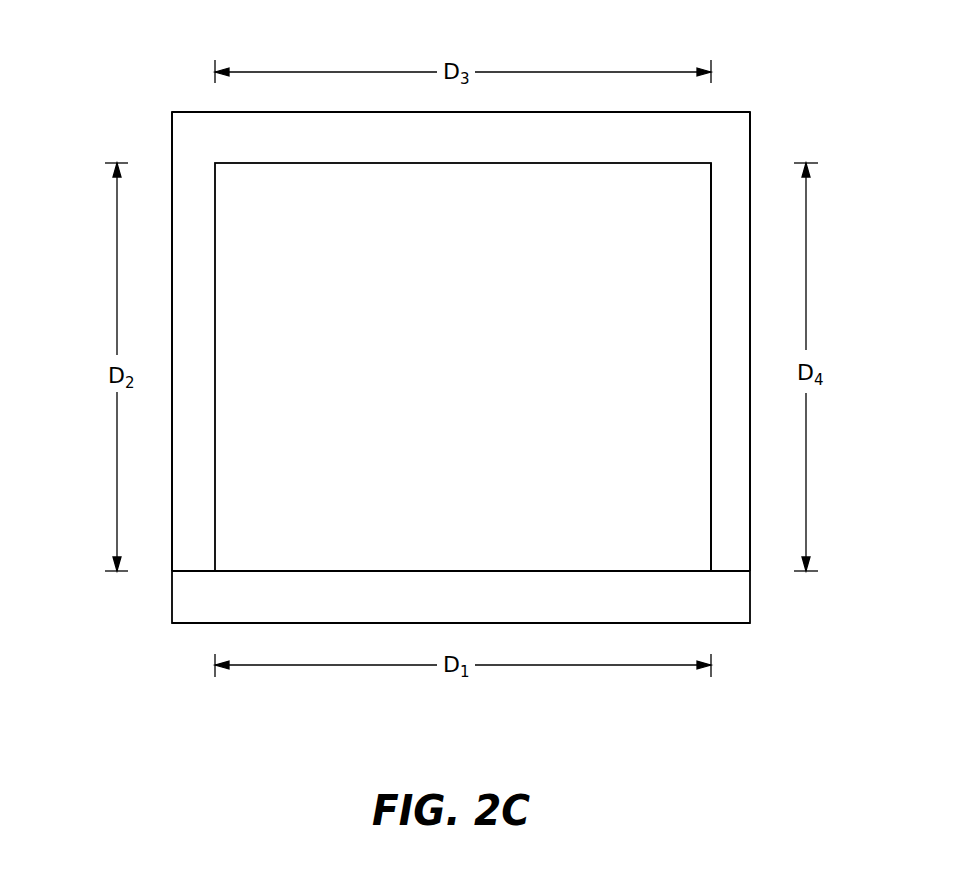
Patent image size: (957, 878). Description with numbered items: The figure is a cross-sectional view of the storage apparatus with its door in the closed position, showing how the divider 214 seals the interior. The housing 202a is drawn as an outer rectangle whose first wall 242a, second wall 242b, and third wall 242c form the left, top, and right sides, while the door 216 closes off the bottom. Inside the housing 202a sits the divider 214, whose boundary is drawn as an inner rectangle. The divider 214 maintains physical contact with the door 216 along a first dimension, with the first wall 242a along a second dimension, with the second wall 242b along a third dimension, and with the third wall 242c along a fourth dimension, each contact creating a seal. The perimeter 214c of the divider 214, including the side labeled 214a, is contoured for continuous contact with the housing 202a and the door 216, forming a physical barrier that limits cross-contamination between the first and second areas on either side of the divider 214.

The housing 202a is at (205, 103).
The divider 214 is at (652, 213).
The right side of boundary 214a is at (613, 443).
The perimeter 214c is at (290, 572).
The door 216 is at (518, 598).
The first wall 242a is at (188, 278).
The second wall 242b is at (405, 137).
The third wall 242c is at (730, 328).